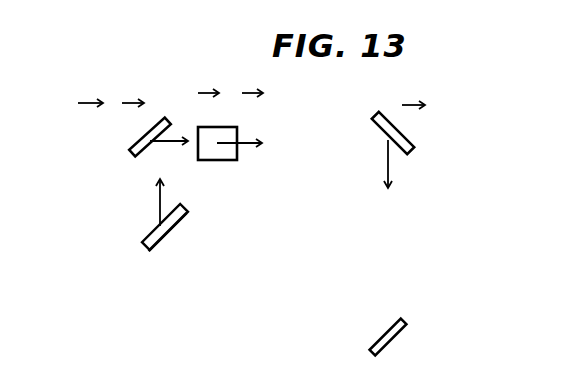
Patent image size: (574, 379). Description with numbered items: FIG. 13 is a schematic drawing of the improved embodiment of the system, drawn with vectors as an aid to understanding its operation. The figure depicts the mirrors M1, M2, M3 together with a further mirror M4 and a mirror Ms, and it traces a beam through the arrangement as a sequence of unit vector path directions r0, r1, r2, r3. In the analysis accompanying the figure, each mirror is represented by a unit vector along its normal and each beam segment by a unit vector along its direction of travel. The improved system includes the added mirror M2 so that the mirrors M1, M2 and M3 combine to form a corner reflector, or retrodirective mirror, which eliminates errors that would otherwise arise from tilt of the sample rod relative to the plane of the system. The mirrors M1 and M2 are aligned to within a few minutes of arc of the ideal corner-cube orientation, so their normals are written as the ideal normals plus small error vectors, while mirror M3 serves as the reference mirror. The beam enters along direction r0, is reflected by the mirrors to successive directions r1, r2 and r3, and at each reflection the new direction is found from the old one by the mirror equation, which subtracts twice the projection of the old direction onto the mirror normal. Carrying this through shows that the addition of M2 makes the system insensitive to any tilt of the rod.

The mirror M1 is at (120, 127).
The mirror M2 is at (229, 124).
The reference mirror M3 is at (400, 127).
The fourth mirror M4 is at (396, 339).
The source mirror Ms is at (172, 233).
The beam path direction r0 is at (148, 195).
The beam path direction r1 is at (170, 151).
The beam path direction r2 is at (268, 165).
The beam path direction r3 is at (428, 168).